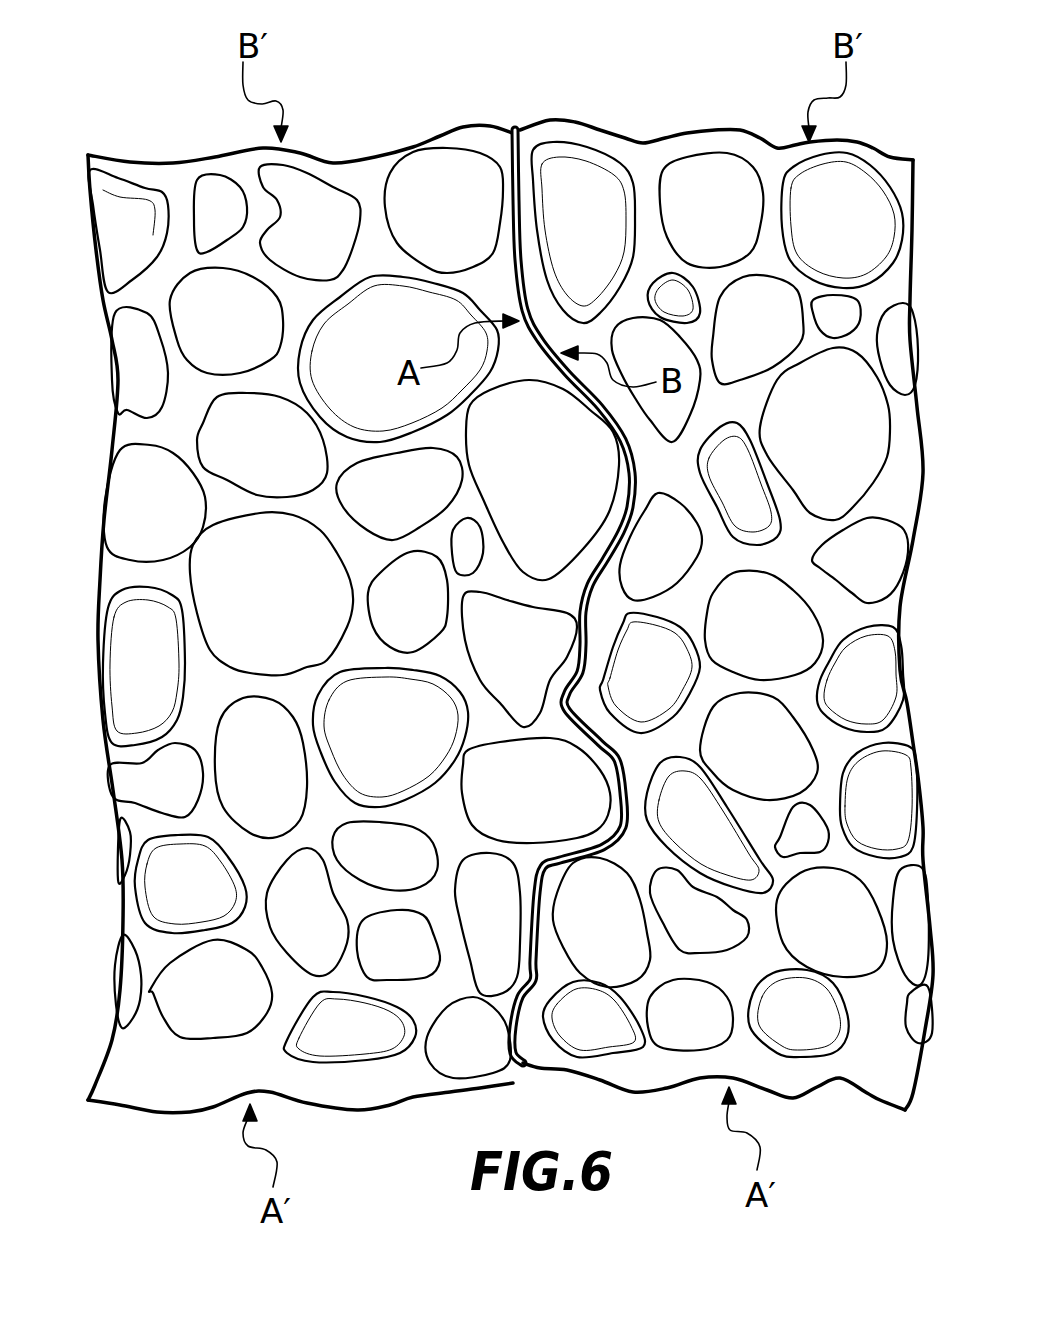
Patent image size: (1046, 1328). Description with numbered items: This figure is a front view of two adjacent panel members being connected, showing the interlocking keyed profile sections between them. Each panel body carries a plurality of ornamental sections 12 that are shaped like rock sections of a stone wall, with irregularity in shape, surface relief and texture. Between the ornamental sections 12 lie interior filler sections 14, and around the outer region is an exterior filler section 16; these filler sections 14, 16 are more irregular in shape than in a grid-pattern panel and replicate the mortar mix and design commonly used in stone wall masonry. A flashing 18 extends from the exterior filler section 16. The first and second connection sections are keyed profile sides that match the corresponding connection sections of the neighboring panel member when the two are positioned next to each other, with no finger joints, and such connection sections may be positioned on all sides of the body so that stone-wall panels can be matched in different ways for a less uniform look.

The ornamental sections 12 is at (784, 648).
The interior filler sections 14 is at (502, 631).
The exterior filler section 16 is at (360, 574).
The flashing 18 is at (726, 572).